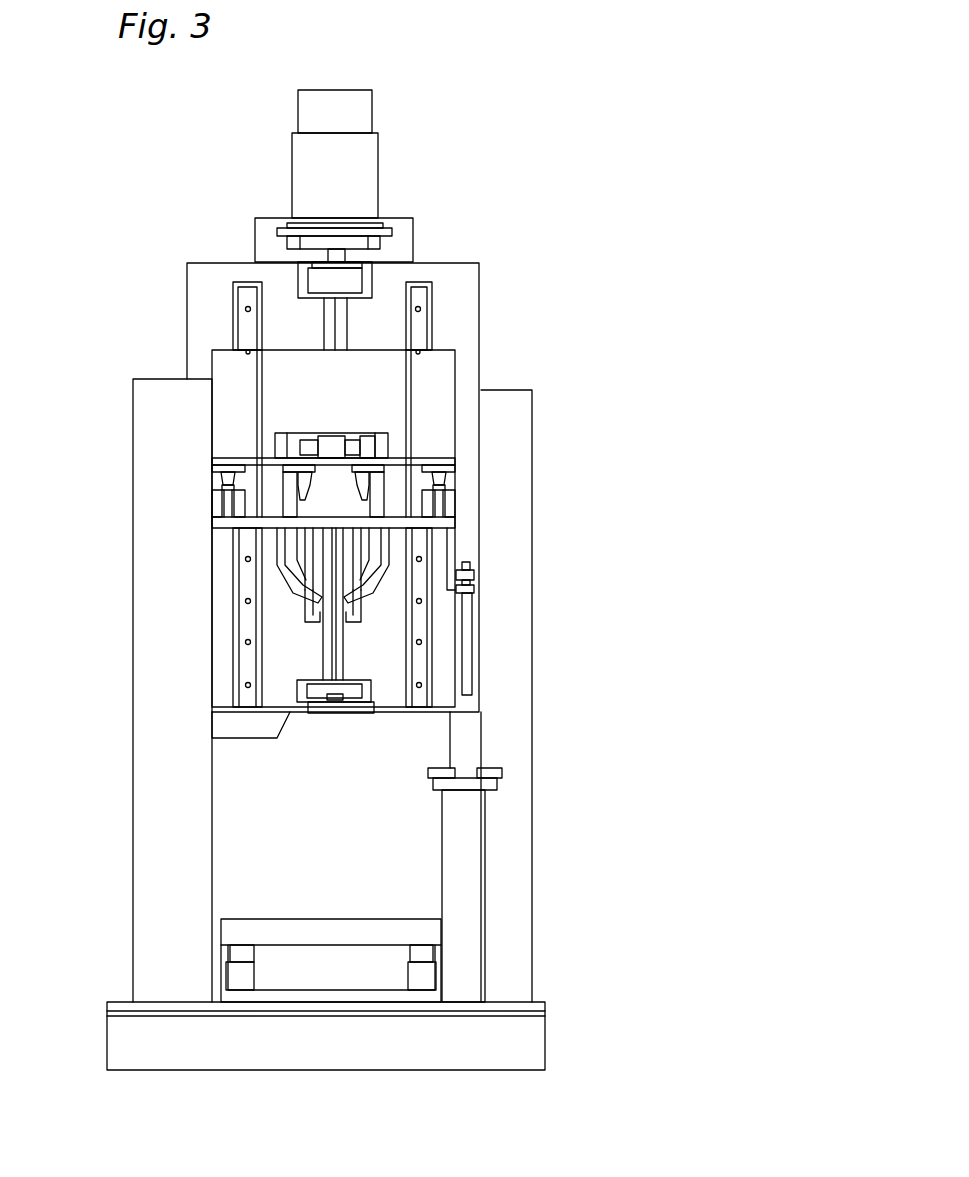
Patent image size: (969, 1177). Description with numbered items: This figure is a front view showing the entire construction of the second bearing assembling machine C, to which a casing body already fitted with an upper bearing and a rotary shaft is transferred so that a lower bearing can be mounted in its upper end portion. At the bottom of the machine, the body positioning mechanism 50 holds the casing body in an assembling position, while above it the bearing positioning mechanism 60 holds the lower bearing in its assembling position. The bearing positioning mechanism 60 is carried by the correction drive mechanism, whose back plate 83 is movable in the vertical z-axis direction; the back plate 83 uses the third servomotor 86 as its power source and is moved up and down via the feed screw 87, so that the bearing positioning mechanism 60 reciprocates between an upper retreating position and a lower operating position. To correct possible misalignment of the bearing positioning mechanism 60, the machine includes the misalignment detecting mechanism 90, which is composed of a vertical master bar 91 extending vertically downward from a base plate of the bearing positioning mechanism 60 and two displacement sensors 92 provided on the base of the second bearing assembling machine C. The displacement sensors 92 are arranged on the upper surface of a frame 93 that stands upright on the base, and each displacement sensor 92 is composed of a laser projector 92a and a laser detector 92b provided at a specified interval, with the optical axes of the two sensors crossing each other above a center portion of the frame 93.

The second bearing assembling machine C is at (547, 317).
The third servomotor 86 is at (378, 172).
The feed screw 87 is at (323, 311).
The back plate 83 is at (442, 426).
The bearing positioning mechanism 60 is at (270, 570).
The misalignment detecting mechanism 90 is at (585, 782).
The vertical master bar 91 is at (468, 645).
The displacement sensor 92 is at (550, 748).
The laser projector 92a is at (445, 770).
The laser detector 92b is at (492, 768).
The frame 93 is at (554, 890).
The body positioning mechanism 50 is at (218, 969).